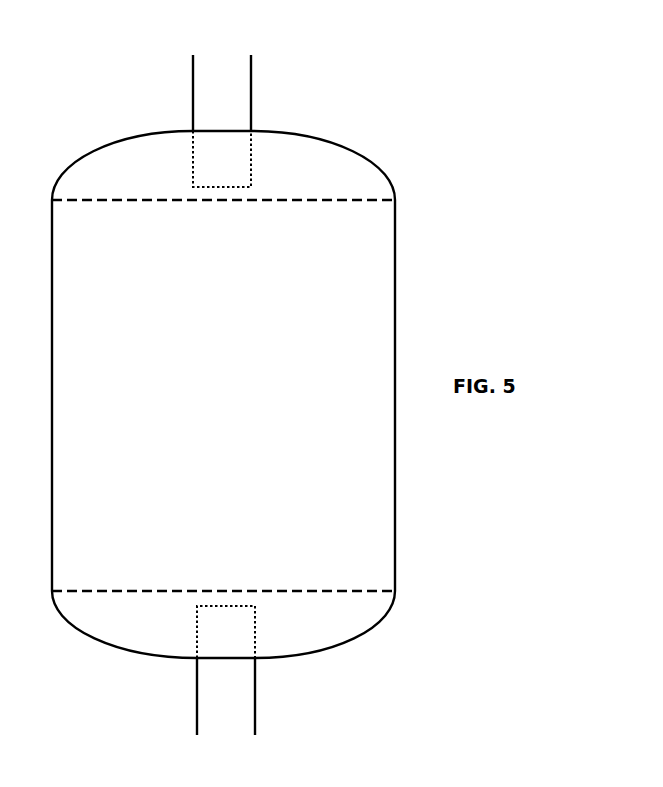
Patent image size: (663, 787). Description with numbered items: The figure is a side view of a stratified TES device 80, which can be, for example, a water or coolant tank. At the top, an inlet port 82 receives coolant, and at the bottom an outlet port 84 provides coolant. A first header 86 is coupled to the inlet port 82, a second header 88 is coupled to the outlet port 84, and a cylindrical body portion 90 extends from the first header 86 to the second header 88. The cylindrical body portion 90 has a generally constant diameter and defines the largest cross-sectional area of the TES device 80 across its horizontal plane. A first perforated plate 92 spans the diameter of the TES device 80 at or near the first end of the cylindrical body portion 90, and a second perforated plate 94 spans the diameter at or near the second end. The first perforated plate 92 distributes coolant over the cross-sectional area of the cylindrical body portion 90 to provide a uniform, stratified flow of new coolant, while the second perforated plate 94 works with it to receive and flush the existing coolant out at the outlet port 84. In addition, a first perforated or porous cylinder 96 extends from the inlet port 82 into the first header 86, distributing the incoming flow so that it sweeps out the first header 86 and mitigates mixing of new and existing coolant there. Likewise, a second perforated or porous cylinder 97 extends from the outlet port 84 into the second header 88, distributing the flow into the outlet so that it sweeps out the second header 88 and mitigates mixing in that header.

The stratified TES device 80 is at (401, 92).
The inlet port 82 is at (224, 60).
The outlet port 84 is at (220, 726).
The first header 86 is at (123, 165).
The second header 88 is at (155, 628).
The cylindrical body portion 90 is at (223, 380).
The first perforated plate 92 is at (155, 202).
The second perforated plate 94 is at (160, 589).
The first perforated or porous cylinder 96 is at (252, 160).
The second perforated or porous cylinder 97 is at (256, 635).